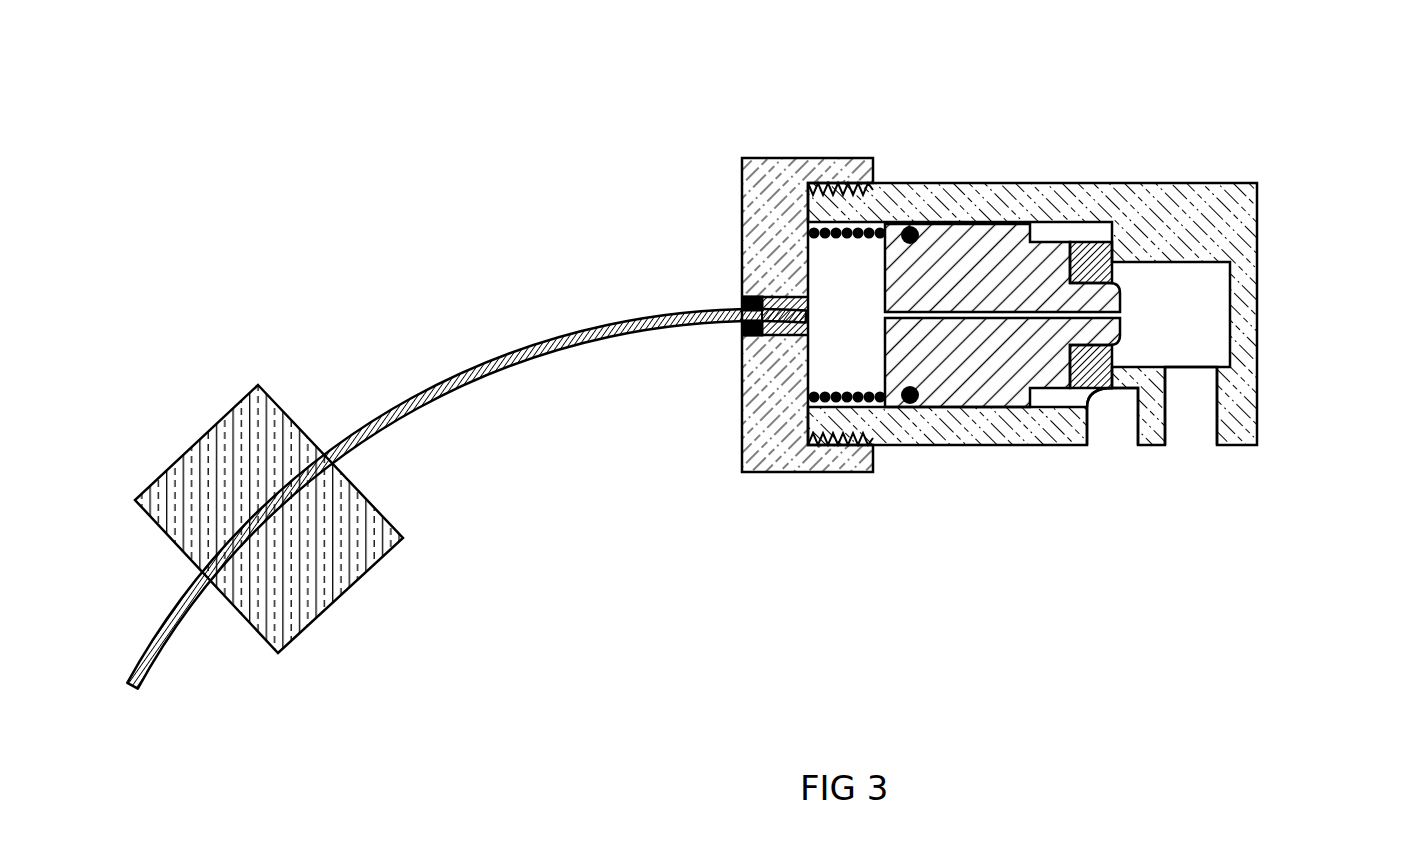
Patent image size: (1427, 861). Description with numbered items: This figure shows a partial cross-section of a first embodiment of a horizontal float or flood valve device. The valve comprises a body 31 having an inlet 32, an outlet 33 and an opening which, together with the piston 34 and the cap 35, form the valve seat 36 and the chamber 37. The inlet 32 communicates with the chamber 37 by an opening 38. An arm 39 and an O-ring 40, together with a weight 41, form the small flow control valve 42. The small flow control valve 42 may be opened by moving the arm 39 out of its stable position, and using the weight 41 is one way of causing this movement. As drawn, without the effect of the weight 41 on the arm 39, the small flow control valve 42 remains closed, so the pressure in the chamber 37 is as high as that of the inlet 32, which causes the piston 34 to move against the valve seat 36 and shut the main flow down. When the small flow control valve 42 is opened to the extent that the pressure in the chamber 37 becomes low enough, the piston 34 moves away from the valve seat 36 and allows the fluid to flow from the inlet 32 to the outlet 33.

The body 31 is at (935, 430).
The inlet 32 is at (1195, 433).
The outlet 33 is at (1107, 427).
The piston 34 is at (1000, 250).
The cap 35 is at (752, 178).
The valve seat 36 is at (1115, 245).
The chamber 37 is at (863, 260).
The opening 38 is at (980, 318).
The arm 39 is at (530, 347).
The O-ring 40 is at (742, 320).
The weight 41 is at (257, 383).
The small flow control valve 42 is at (740, 325).